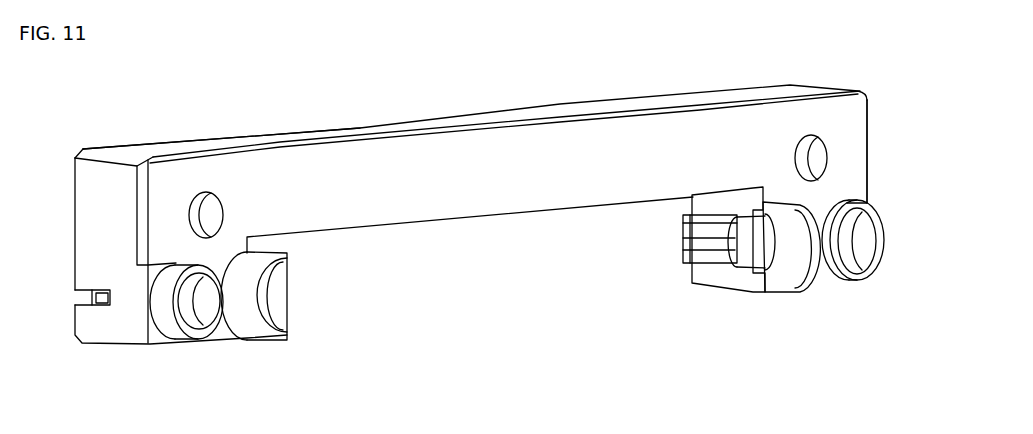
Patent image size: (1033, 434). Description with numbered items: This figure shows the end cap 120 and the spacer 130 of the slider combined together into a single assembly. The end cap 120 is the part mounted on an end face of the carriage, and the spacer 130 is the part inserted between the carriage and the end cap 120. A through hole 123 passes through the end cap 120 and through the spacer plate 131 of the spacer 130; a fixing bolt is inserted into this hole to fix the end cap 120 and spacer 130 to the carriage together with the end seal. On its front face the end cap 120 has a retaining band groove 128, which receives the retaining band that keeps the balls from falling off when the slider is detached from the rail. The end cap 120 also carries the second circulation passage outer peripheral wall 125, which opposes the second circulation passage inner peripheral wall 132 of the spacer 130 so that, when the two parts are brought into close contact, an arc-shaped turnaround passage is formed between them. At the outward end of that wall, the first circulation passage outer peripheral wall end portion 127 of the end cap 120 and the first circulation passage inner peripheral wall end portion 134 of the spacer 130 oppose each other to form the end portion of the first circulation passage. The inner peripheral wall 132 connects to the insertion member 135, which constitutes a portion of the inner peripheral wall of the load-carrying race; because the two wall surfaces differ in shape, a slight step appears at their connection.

The end cap 120 is at (80, 188).
The spacer 130 is at (510, 147).
The through hole 123 is at (808, 158).
The spacer plate 131 is at (853, 118).
The second circulation passage outer peripheral wall 125 is at (686, 211).
The retaining band groove 128 is at (88, 302).
The first circulation passage outer peripheral wall end portion 127 is at (165, 325).
The first circulation passage inner peripheral wall end portion 134 is at (203, 318).
The insertion member 135 is at (283, 328).
The second circulation passage inner peripheral wall 132 is at (735, 275).